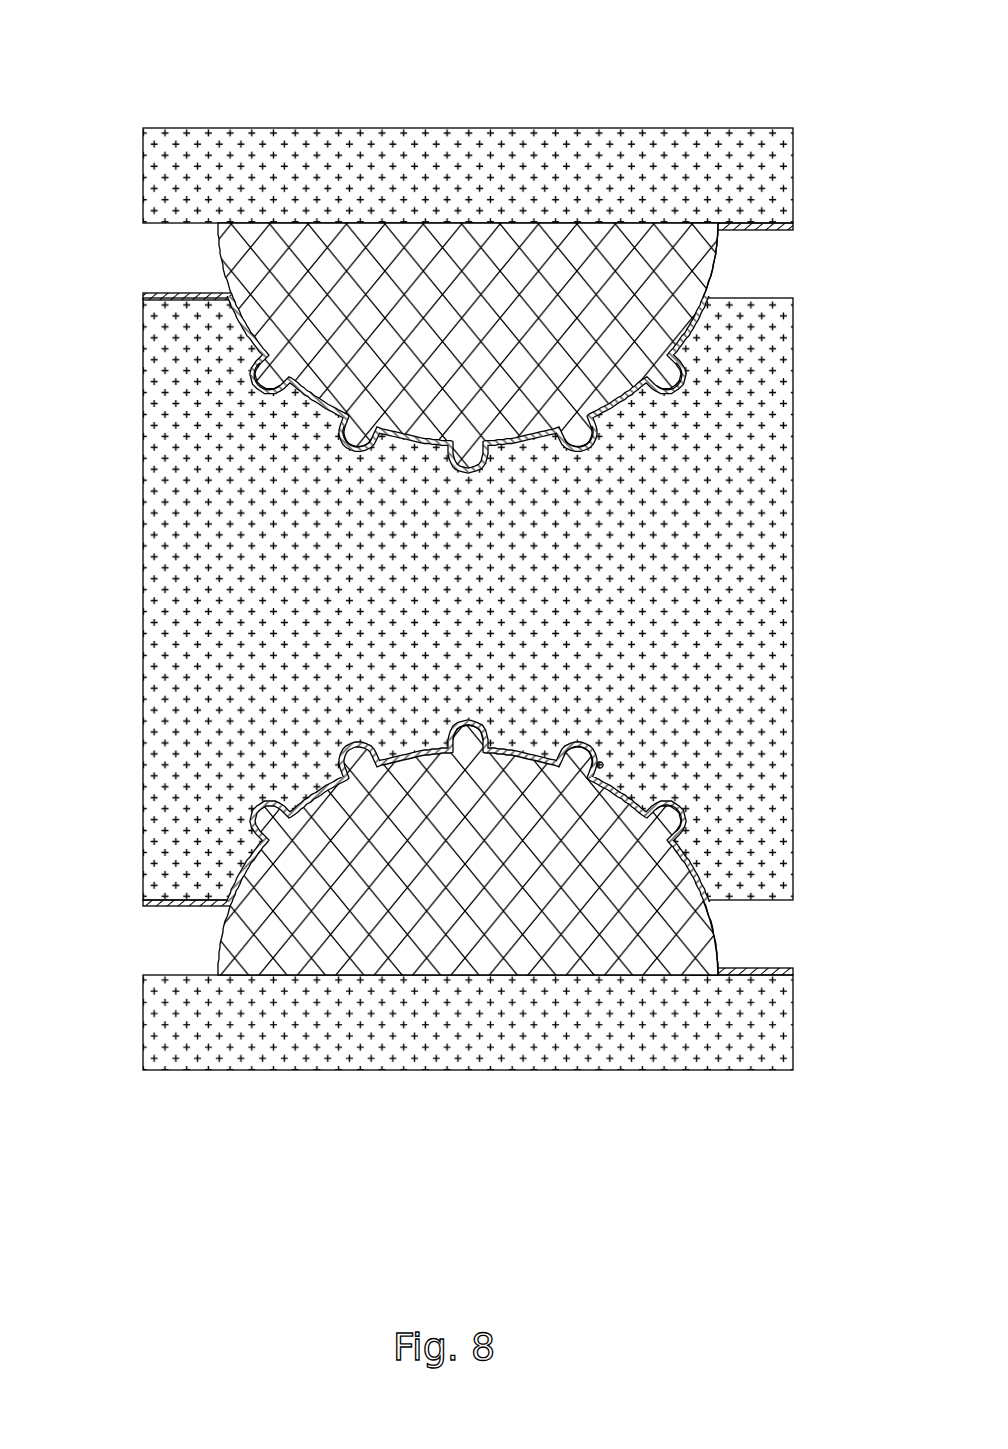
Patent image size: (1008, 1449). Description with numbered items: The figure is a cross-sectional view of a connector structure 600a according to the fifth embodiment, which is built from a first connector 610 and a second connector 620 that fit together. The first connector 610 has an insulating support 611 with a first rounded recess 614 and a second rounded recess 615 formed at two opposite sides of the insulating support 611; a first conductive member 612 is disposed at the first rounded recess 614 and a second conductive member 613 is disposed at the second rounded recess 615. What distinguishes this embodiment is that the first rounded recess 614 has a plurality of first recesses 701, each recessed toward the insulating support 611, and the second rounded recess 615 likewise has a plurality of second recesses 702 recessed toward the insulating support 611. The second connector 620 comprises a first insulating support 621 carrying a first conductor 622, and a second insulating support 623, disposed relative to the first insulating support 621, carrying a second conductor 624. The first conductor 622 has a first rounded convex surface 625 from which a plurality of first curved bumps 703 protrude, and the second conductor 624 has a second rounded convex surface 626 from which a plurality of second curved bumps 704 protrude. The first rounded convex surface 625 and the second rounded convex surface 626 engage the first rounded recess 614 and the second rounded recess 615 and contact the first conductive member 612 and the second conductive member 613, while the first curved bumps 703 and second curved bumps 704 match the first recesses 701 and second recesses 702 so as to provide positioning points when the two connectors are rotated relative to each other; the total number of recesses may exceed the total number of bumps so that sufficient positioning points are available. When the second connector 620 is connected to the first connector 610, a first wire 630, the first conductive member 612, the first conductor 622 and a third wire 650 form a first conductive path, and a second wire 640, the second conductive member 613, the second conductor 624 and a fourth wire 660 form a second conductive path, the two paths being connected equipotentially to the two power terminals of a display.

The connector structure 600a is at (75, 22).
The first connector 610 is at (464, 601).
The insulating support 611 is at (770, 497).
The first conductive member 612 is at (569, 345).
The first rounded recess 614 is at (700, 311).
The second conductive member 613 is at (569, 850).
The second rounded recess 615 is at (700, 884).
The second connector 620 is at (531, 908).
The first insulating support 621 is at (772, 177).
The first conductor 622 is at (440, 272).
The second insulating support 623 is at (778, 1018).
The second conductor 624 is at (440, 930).
The first rounded convex surface 625 is at (717, 262).
The second rounded convex surface 626 is at (717, 932).
The first wire 630 is at (145, 296).
The second wire 640 is at (145, 902).
The third wire 650 is at (793, 227).
The fourth wire 660 is at (793, 972).
The first recesses 701 is at (675, 390).
The second recesses 702 is at (600, 757).
The first curved bumps 703 is at (273, 368).
The second curved bumps 704 is at (468, 740).